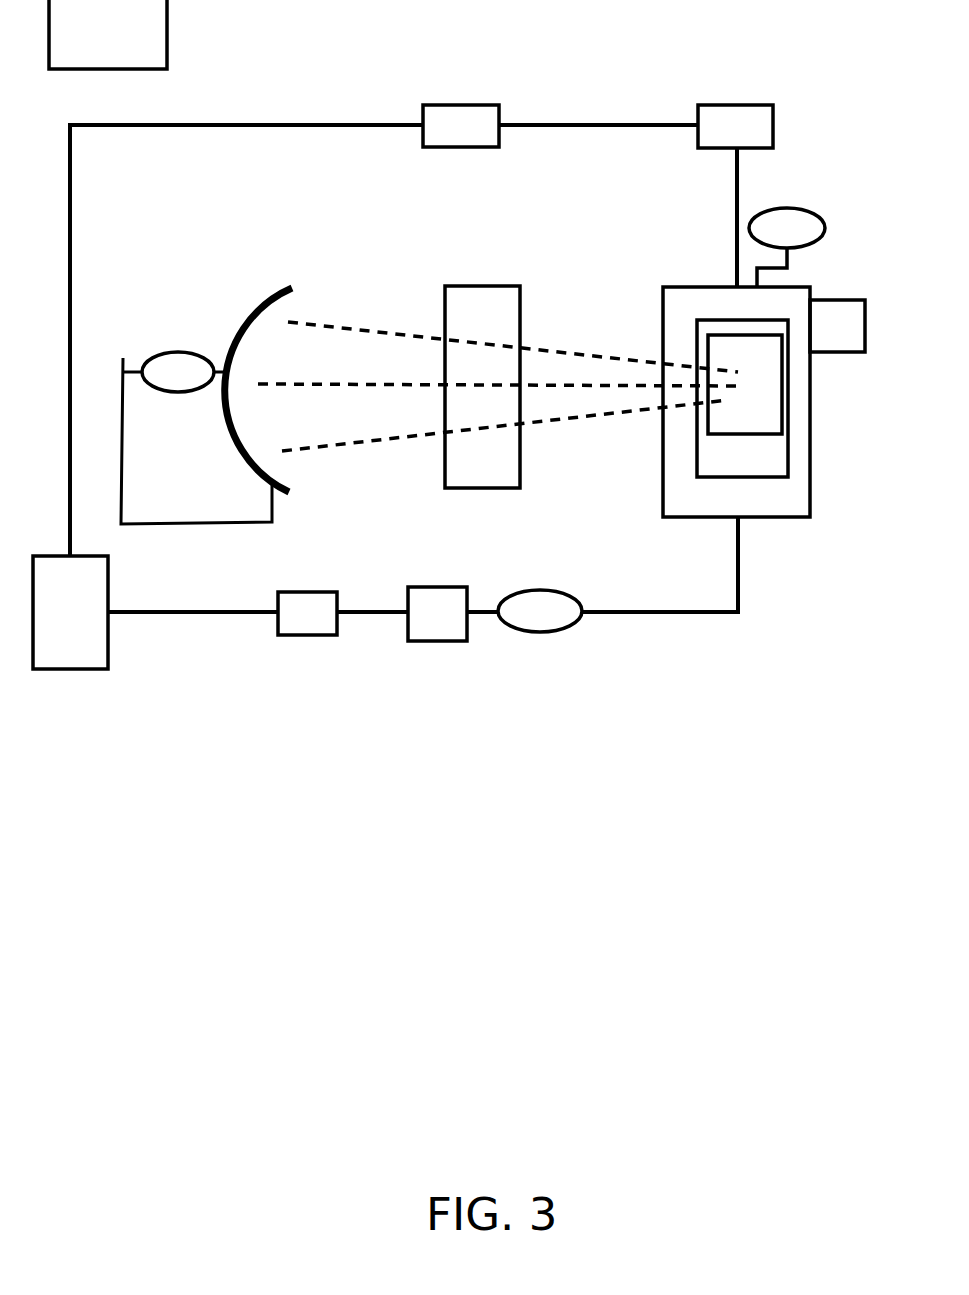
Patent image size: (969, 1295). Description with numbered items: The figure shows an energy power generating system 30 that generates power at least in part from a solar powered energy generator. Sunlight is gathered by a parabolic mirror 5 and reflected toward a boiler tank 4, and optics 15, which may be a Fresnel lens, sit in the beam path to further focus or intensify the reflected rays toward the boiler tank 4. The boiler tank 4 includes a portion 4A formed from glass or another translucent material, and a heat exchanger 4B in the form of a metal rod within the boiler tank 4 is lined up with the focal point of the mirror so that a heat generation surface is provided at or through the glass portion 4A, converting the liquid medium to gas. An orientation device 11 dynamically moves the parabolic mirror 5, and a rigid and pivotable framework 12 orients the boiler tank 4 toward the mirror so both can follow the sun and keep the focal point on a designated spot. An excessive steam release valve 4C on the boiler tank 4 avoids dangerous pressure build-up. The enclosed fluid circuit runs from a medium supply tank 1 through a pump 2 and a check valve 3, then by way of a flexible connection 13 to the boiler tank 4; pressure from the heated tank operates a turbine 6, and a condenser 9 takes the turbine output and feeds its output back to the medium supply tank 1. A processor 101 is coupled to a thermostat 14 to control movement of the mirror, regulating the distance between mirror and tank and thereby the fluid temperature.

The processor 101 is at (130, 27).
The condenser 9 is at (453, 139).
The turbine 6 is at (728, 139).
The excessive steam release valve 4C is at (771, 241).
The boiler tank 4 is at (729, 510).
The thermostat 14 is at (822, 343).
The portion formed from glass 4A is at (726, 468).
The heat exchanger 4B is at (729, 426).
The optics 15 is at (467, 400).
The parabolic mirror 5 is at (272, 296).
The orientation device 11 is at (168, 383).
The rigid and pivotable framework 12 is at (151, 505).
The medium supply tank 1 is at (62, 594).
The pump 2 is at (300, 627).
The check valve 3 is at (429, 625).
The flexible connection 13 is at (525, 624).
The system 30 is at (486, 1165).